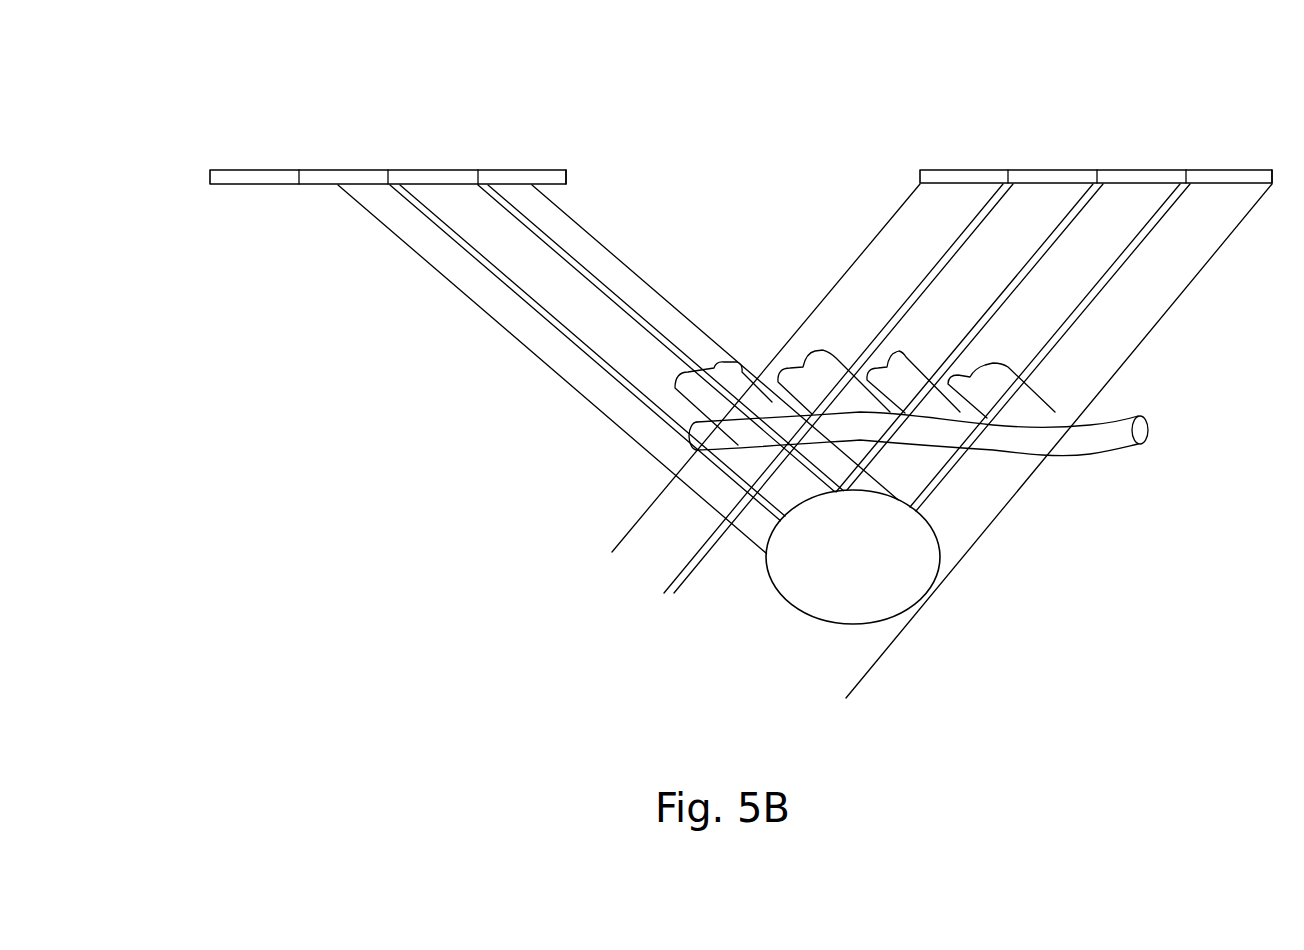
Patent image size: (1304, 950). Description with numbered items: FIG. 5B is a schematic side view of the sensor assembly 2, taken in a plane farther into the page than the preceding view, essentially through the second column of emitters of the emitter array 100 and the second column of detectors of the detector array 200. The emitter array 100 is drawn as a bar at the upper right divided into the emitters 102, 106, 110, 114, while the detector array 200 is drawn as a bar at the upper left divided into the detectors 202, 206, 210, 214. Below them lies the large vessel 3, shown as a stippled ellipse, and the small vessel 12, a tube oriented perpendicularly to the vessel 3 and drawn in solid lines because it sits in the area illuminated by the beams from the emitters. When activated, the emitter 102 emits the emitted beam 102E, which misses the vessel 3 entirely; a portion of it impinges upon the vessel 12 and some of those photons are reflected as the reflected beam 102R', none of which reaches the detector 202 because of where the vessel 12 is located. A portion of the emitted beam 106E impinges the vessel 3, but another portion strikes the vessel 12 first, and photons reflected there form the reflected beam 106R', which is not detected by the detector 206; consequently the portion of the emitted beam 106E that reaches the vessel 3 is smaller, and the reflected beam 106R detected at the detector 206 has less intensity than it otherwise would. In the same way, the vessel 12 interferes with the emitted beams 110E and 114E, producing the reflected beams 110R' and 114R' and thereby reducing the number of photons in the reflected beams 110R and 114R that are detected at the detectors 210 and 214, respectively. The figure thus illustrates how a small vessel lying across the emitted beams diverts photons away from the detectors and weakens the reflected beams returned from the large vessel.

The sensor assembly 2 is at (738, 122).
The vessel 3 is at (870, 591).
The small vessel 12 is at (939, 468).
The emitter array 100 is at (1096, 106).
The emitter 102 is at (979, 149).
The emitter 106 is at (1068, 149).
The emitter 110 is at (1158, 150).
The emitter 114 is at (1249, 148).
The emitted beam 102E is at (807, 388).
The emitted beam 106E is at (883, 388).
The emitted beam 110E is at (1013, 345).
The emitted beam 114E is at (1059, 441).
The reflected beam 102R' is at (723, 350).
The reflected beam 106R' is at (832, 328).
The reflected beam 110R' is at (942, 431).
The reflected beam 114R' is at (1078, 390).
The reflected beam 106R is at (559, 369).
The reflected beam 110R is at (617, 350).
The reflected beam 114R is at (693, 342).
The detector array 200 is at (388, 107).
The detector 202 is at (274, 140).
The detector 206 is at (356, 146).
The detector 210 is at (446, 146).
The detector 214 is at (533, 144).